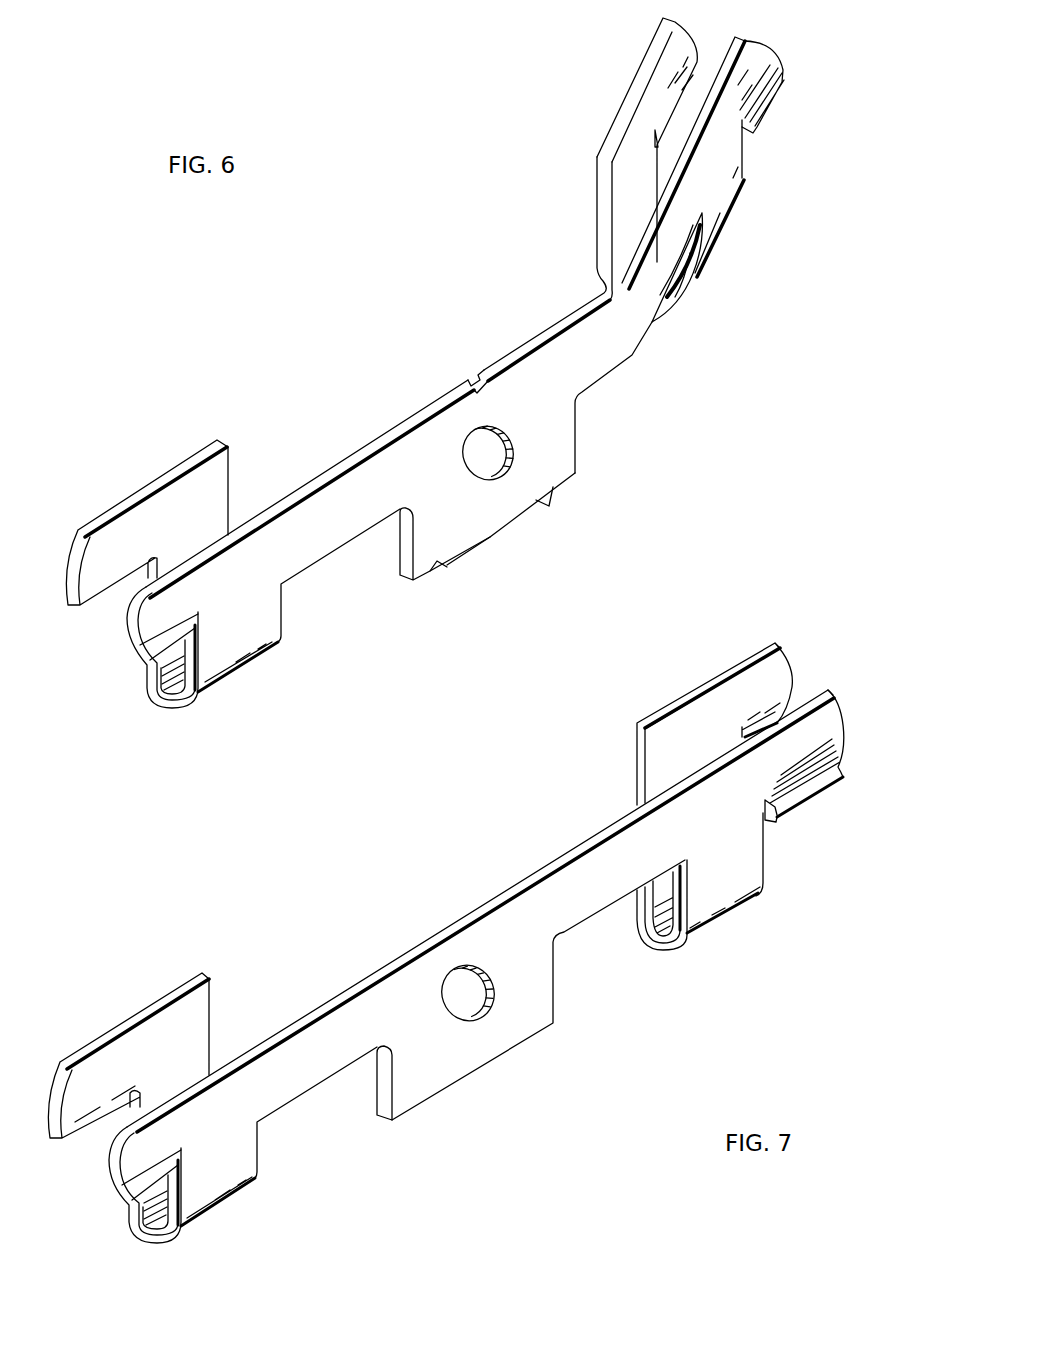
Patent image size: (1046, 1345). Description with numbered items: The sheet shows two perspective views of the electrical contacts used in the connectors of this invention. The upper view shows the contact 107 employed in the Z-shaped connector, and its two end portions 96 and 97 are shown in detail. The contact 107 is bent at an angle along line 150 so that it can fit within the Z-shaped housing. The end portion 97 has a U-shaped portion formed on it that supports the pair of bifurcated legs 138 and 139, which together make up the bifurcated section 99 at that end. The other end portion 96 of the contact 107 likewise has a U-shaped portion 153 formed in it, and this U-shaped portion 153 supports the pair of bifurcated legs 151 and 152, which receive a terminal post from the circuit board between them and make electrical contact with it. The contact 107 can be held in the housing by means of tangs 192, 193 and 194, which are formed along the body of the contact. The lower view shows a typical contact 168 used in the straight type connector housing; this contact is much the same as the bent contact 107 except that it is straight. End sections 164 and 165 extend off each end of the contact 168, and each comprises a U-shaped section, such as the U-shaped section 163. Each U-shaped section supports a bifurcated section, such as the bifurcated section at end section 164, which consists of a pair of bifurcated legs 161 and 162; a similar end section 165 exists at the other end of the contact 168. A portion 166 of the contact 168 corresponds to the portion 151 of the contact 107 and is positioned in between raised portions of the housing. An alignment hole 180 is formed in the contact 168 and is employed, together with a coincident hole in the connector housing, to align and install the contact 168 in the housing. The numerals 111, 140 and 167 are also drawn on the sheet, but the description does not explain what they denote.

In FIG. 6, the end portion 96 is at (131, 686).
In FIG. 6, the end portion 97 is at (752, 172).
In FIG. 6, the bifurcated section 99 is at (718, 32).
In FIG. 6, the contact 107 is at (360, 448).
In FIG. 6, the hole 111 is at (522, 447).
In FIG. 6, the bifurcated leg 138 is at (657, 97).
In FIG. 6, the bifurcated leg 139 is at (762, 80).
In FIG. 6, the curl 140 is at (692, 287).
In FIG. 6, the bend line 150 is at (613, 360).
In FIG. 6, the bifurcated leg 151 is at (112, 533).
In FIG. 6, the bifurcated leg 152 is at (148, 623).
In FIG. 6, the U-shaped portion 153 is at (233, 653).
In FIG. 6, the tang 192 is at (553, 490).
In FIG. 6, the tang 193 is at (447, 568).
In FIG. 6, the tang 194 is at (480, 368).
In FIG. 7, the bifurcated leg 161 is at (773, 667).
In FIG. 7, the bifurcated leg 162 is at (823, 745).
In FIG. 7, the U-shaped section 163 is at (697, 915).
In FIG. 7, the end section 164 is at (822, 670).
In FIG. 7, the end section 165 is at (175, 970).
In FIG. 7, the portion 166 is at (520, 1030).
In FIG. 7, the end portion 167 is at (798, 864).
In FIG. 7, the contact 168 is at (482, 927).
In FIG. 7, the alignment hole 180 is at (470, 1012).